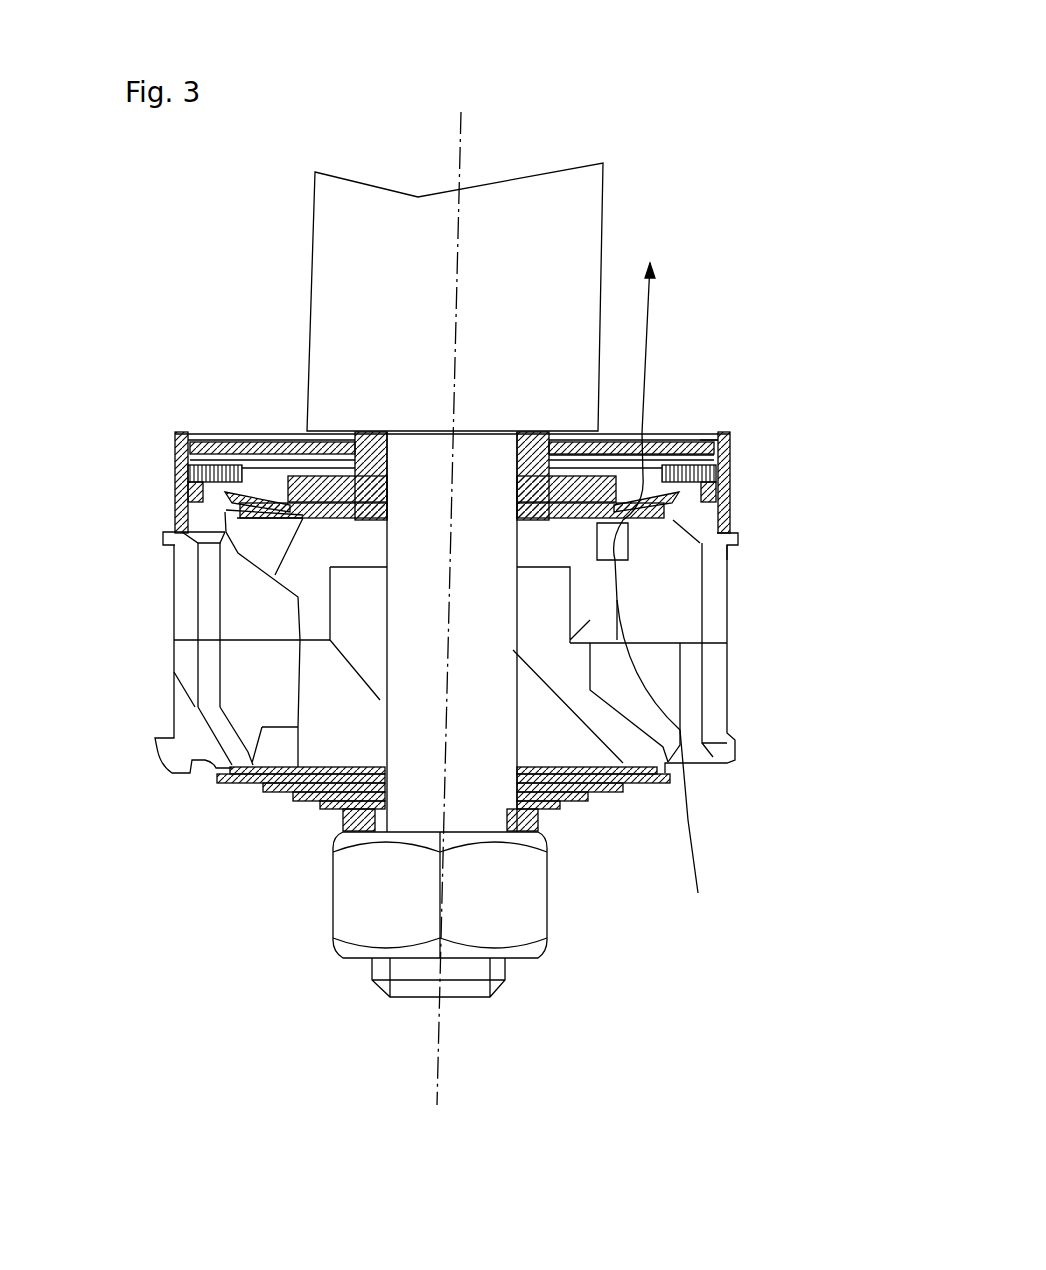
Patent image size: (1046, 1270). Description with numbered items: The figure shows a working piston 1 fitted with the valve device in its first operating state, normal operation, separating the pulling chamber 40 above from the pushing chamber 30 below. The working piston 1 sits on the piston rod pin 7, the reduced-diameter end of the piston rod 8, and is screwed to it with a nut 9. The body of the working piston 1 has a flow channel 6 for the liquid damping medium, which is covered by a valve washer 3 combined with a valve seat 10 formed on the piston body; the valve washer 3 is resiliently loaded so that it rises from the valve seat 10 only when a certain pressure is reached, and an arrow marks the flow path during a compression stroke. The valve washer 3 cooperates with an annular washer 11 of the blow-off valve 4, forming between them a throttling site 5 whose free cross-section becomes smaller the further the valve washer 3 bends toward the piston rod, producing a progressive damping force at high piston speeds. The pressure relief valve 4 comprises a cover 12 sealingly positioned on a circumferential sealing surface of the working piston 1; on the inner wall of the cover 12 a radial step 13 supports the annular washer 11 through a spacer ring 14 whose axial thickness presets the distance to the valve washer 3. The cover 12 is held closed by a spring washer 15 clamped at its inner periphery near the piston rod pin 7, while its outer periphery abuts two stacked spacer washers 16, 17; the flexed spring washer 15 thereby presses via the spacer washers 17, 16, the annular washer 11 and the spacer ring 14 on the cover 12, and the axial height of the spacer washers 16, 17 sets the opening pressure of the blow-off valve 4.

The working piston 1 is at (118, 706).
The valve washer 3 is at (700, 503).
The pressure relief valve (blow-off valve) 4 is at (188, 418).
The throttling site 5 is at (687, 488).
The flow channel 6 is at (627, 607).
The piston rod pin 7 is at (478, 676).
The piston rod 8 is at (532, 205).
The nut 9 is at (497, 907).
The valve seat 10 is at (730, 548).
The annular washer 11 is at (670, 478).
The cover 12 is at (185, 463).
The step 13 is at (188, 494).
The spacer ring 14 is at (187, 492).
The spring washer 15 is at (705, 441).
The spacer washer 16 is at (680, 466).
The spacer washer 17 is at (713, 446).
The pushing chamber 30 is at (238, 905).
The pulling chamber 40 is at (255, 265).